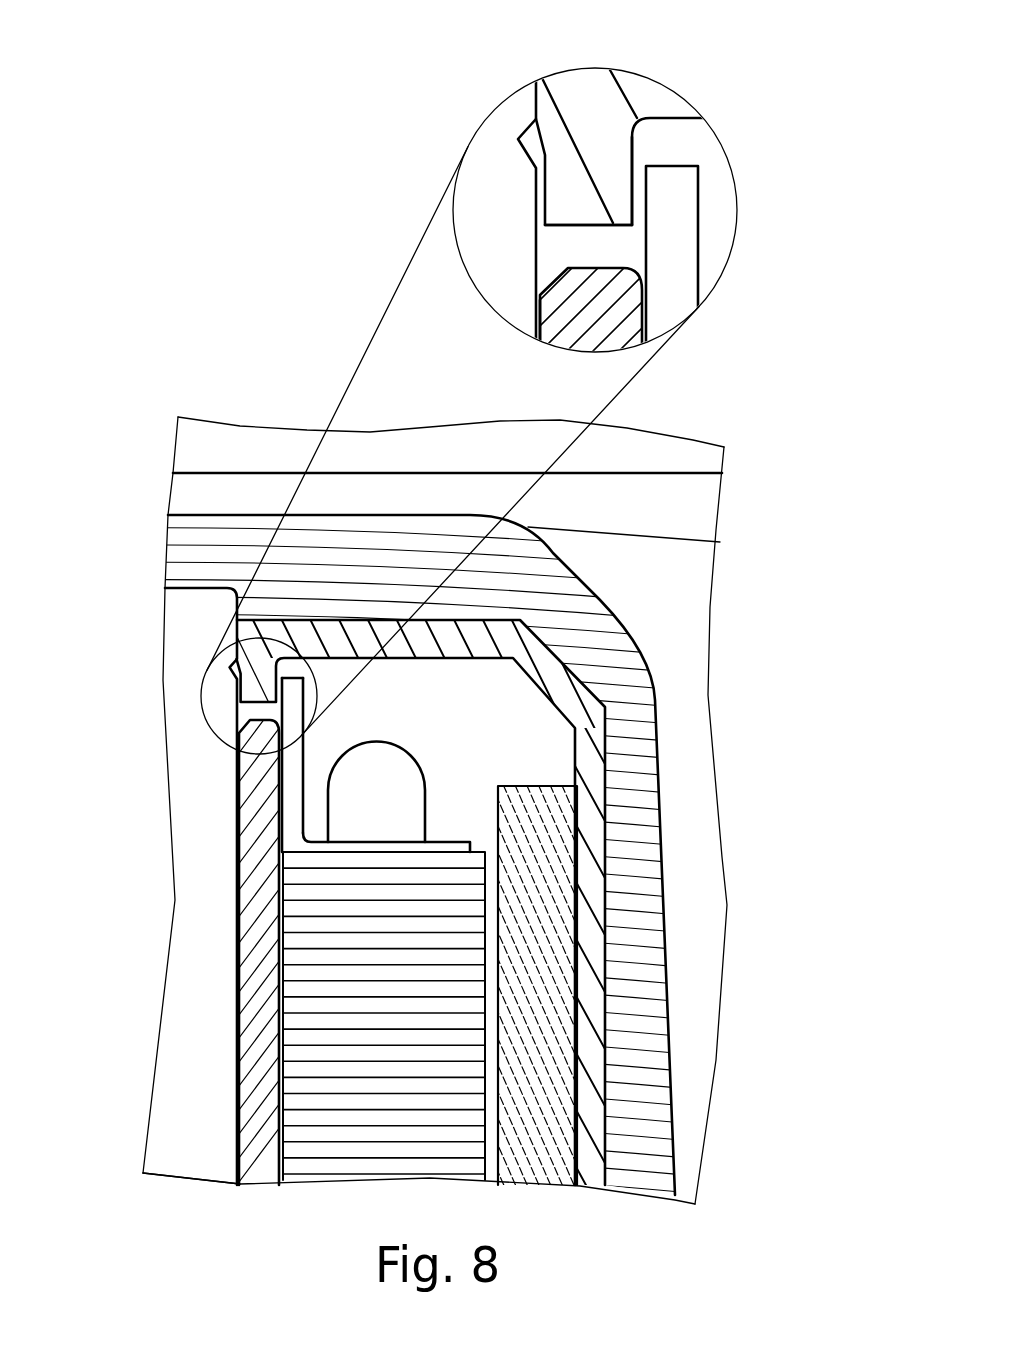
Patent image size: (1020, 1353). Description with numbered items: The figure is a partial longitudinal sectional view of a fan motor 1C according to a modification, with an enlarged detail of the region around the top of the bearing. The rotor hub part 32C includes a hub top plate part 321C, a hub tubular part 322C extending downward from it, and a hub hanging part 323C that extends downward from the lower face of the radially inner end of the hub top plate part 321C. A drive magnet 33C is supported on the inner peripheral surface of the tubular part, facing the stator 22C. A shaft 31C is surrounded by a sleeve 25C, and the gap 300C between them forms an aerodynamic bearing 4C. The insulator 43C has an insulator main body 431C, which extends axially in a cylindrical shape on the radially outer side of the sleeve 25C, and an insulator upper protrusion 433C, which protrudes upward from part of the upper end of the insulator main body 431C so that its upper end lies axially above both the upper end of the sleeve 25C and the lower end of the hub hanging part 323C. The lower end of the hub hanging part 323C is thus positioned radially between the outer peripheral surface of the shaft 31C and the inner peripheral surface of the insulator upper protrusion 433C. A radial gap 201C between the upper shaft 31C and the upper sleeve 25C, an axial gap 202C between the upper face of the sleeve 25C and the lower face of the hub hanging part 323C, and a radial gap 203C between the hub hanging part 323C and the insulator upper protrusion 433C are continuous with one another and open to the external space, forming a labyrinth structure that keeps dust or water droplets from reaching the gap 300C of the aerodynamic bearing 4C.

The fan motor 1C is at (270, 383).
The stator 22C is at (375, 728).
The sleeve 25C is at (260, 957).
The shaft 31C is at (510, 117).
The rotor hub part 32C is at (837, 337).
The hub top plate part 321C is at (475, 637).
The hub tubular part 322C is at (590, 837).
The hub hanging part 323C is at (587, 117).
The drive magnet 33C is at (540, 1108).
The insulator 43C is at (155, 677).
The insulator main body 431C is at (290, 848).
The insulator upper protrusion 433C is at (290, 787).
The aerodynamic bearing 4C is at (233, 1025).
The gap 300C is at (233, 1133).
The radial gap 201C is at (537, 317).
The axial gap 202C is at (597, 253).
The radial gap 203C is at (637, 200).